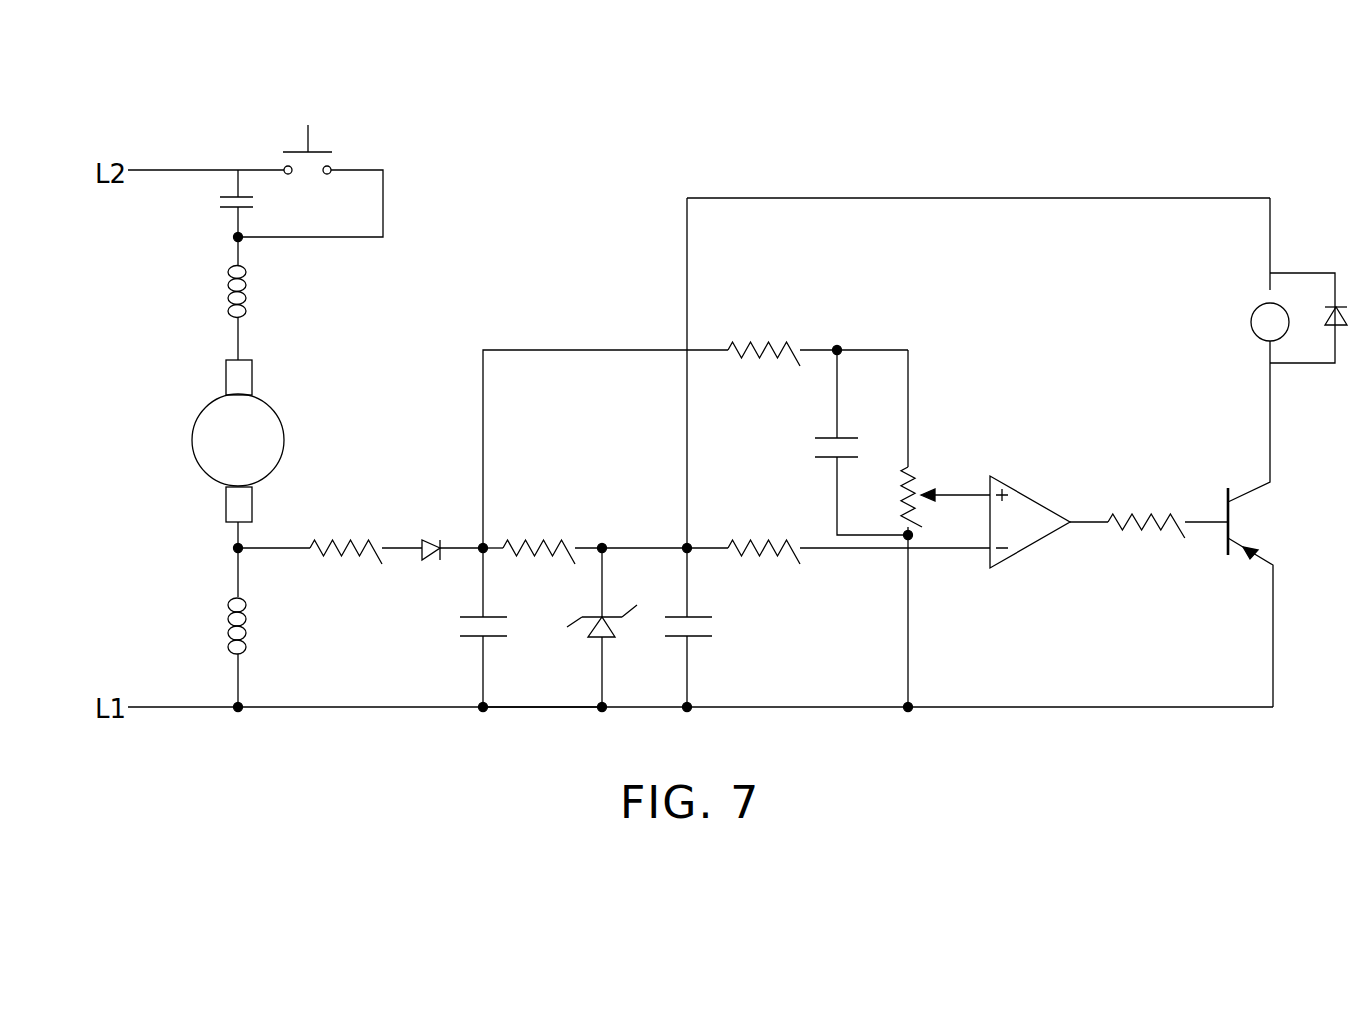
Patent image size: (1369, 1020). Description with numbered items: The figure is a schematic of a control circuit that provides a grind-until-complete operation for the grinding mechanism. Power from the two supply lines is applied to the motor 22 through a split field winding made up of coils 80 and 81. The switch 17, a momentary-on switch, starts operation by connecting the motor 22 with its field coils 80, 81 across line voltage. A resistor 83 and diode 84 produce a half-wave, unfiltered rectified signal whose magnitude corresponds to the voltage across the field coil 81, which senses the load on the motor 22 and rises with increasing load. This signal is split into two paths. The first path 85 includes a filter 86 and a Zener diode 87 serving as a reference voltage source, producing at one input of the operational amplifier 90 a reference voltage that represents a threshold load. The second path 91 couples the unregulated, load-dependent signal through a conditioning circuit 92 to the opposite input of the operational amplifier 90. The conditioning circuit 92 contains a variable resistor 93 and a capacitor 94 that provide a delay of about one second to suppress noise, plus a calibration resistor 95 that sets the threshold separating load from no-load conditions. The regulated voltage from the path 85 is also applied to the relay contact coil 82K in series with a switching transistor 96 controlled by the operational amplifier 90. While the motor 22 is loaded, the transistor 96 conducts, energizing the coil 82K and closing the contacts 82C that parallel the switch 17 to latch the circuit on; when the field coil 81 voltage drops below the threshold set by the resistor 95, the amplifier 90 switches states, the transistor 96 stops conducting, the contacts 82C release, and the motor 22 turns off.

The switch 17 is at (320, 143).
The contacts 82C is at (220, 202).
The coil 80 is at (247, 290).
The motor 22 is at (192, 442).
The field coil 81 is at (247, 632).
The resistor 83 is at (342, 542).
The diode 84 is at (425, 540).
The first path 85 is at (493, 548).
The second path 91 is at (483, 488).
The Zener diode 87 is at (613, 638).
The filter 86 is at (540, 662).
The variable resistor 93 is at (768, 340).
The conditioning circuit 92 is at (778, 417).
The capacitor 94 is at (843, 435).
The calibration resistor 95 is at (920, 490).
The operational amplifier 90 is at (1033, 510).
The switching transistor 96 is at (1250, 518).
The relay contact coil 82K is at (1250, 320).